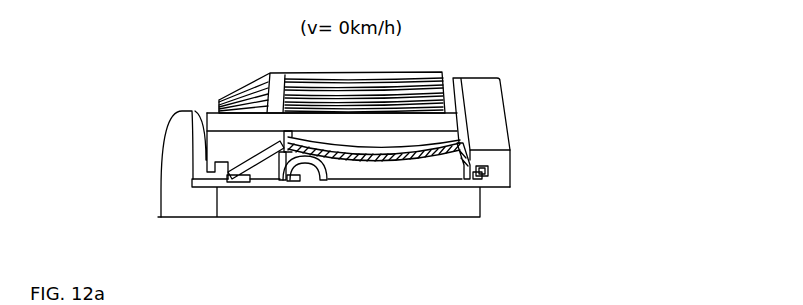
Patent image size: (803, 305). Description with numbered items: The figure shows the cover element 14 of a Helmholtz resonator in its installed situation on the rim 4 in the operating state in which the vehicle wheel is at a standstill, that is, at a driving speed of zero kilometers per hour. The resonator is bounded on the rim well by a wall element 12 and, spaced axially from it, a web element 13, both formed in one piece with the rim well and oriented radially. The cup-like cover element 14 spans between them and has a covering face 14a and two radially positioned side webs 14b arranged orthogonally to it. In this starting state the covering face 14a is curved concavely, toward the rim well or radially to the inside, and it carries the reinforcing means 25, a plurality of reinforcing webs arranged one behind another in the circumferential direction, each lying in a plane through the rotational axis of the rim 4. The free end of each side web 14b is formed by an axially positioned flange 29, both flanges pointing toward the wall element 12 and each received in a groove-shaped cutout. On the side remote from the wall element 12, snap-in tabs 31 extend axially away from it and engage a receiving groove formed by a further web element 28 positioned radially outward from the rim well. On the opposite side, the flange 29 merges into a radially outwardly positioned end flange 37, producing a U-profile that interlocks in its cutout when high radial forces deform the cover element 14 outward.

The rim 4 is at (508, 98).
The wall element 12 is at (500, 163).
The web element 13 is at (315, 178).
The cover element 14 is at (433, 72).
The covering face 14a is at (377, 155).
The side webs 14b is at (280, 168).
The means for reinforcement 25 is at (305, 85).
The web element 28 is at (218, 181).
The axially positioned flange 29 is at (290, 178).
The snap-in tabs 31 is at (243, 173).
The end flange 37 is at (488, 174).